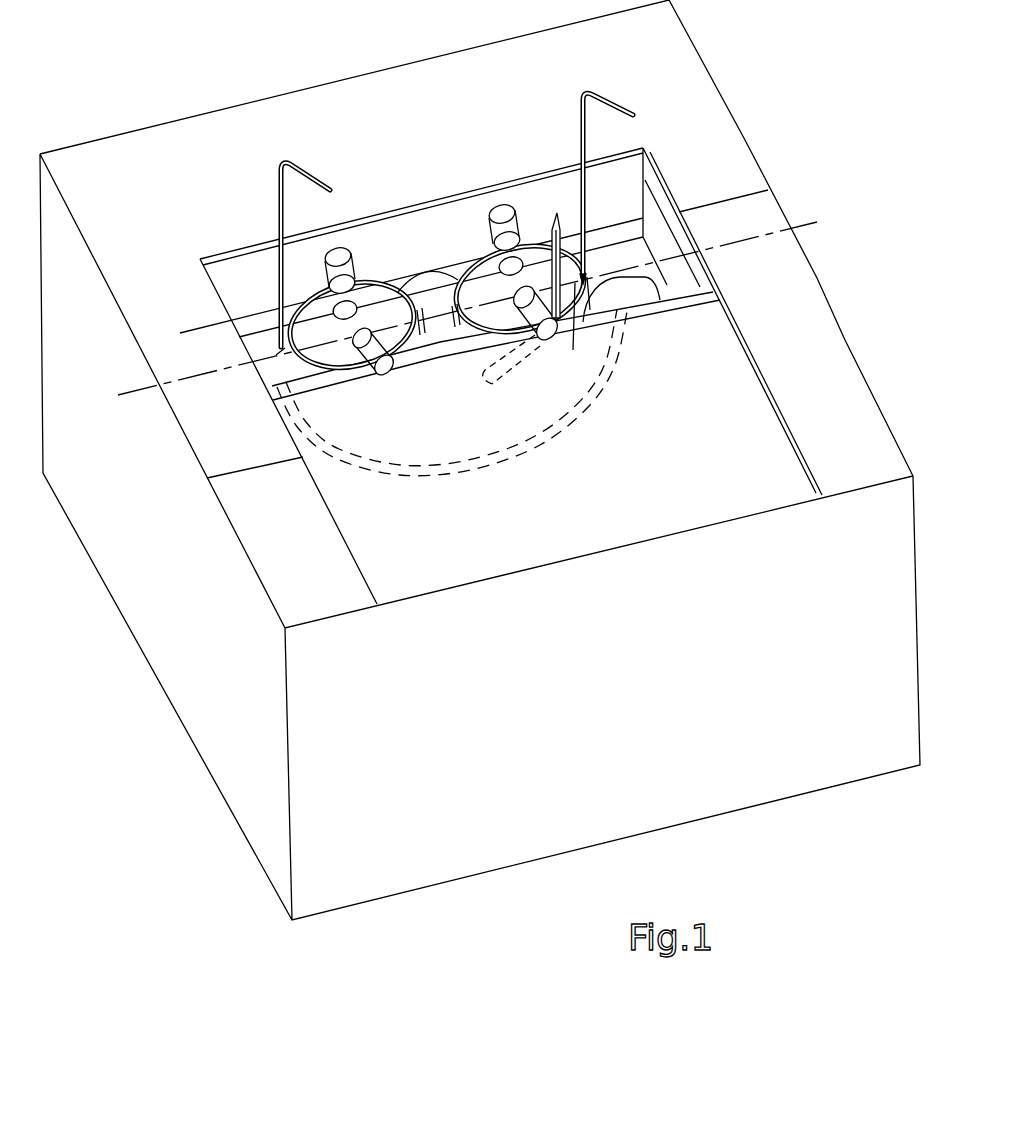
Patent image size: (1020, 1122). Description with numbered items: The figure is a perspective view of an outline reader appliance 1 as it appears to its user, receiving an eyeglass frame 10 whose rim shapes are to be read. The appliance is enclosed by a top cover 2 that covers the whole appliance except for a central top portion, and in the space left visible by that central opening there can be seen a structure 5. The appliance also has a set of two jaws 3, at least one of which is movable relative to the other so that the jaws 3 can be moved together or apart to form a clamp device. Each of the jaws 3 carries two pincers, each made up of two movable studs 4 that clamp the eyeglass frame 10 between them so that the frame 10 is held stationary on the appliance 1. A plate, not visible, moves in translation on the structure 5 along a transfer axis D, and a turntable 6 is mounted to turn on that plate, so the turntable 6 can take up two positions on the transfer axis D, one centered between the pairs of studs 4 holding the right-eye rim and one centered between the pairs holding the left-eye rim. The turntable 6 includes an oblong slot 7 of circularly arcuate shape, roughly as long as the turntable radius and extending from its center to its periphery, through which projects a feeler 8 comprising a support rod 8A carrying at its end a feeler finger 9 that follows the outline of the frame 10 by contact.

The outline reader appliance 1 is at (215, 81).
The top cover 2 is at (833, 388).
The jaws 3 is at (238, 278).
The movable studs 4 is at (340, 262).
The structure 5 is at (630, 290).
The turntable 6 is at (282, 368).
The oblong slot 7 is at (510, 386).
The feeler 8 is at (558, 243).
The support rod 8A is at (590, 305).
The feeler finger 9 is at (555, 220).
The eyeglass frame 10 is at (317, 180).
The transfer axis D is at (142, 392).